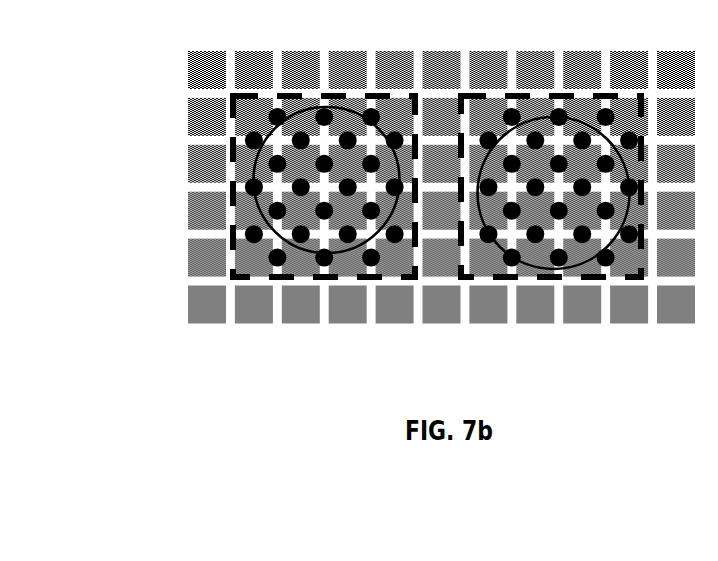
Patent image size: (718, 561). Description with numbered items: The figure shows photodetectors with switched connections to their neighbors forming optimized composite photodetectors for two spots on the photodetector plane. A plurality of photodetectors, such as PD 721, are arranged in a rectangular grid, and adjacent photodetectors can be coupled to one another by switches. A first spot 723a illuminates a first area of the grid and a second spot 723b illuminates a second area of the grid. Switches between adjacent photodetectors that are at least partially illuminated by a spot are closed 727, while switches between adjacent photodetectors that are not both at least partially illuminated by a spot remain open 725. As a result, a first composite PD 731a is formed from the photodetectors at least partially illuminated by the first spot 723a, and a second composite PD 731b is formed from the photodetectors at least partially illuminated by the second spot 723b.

The photodetector (PD) 721 is at (382, 187).
The open switch 725 is at (223, 117).
The closed switch 727 is at (257, 238).
The first composite PD 731a is at (234, 276).
The second composite PD 731b is at (627, 278).
The first spot 723a is at (303, 253).
The second spot 723b is at (597, 256).